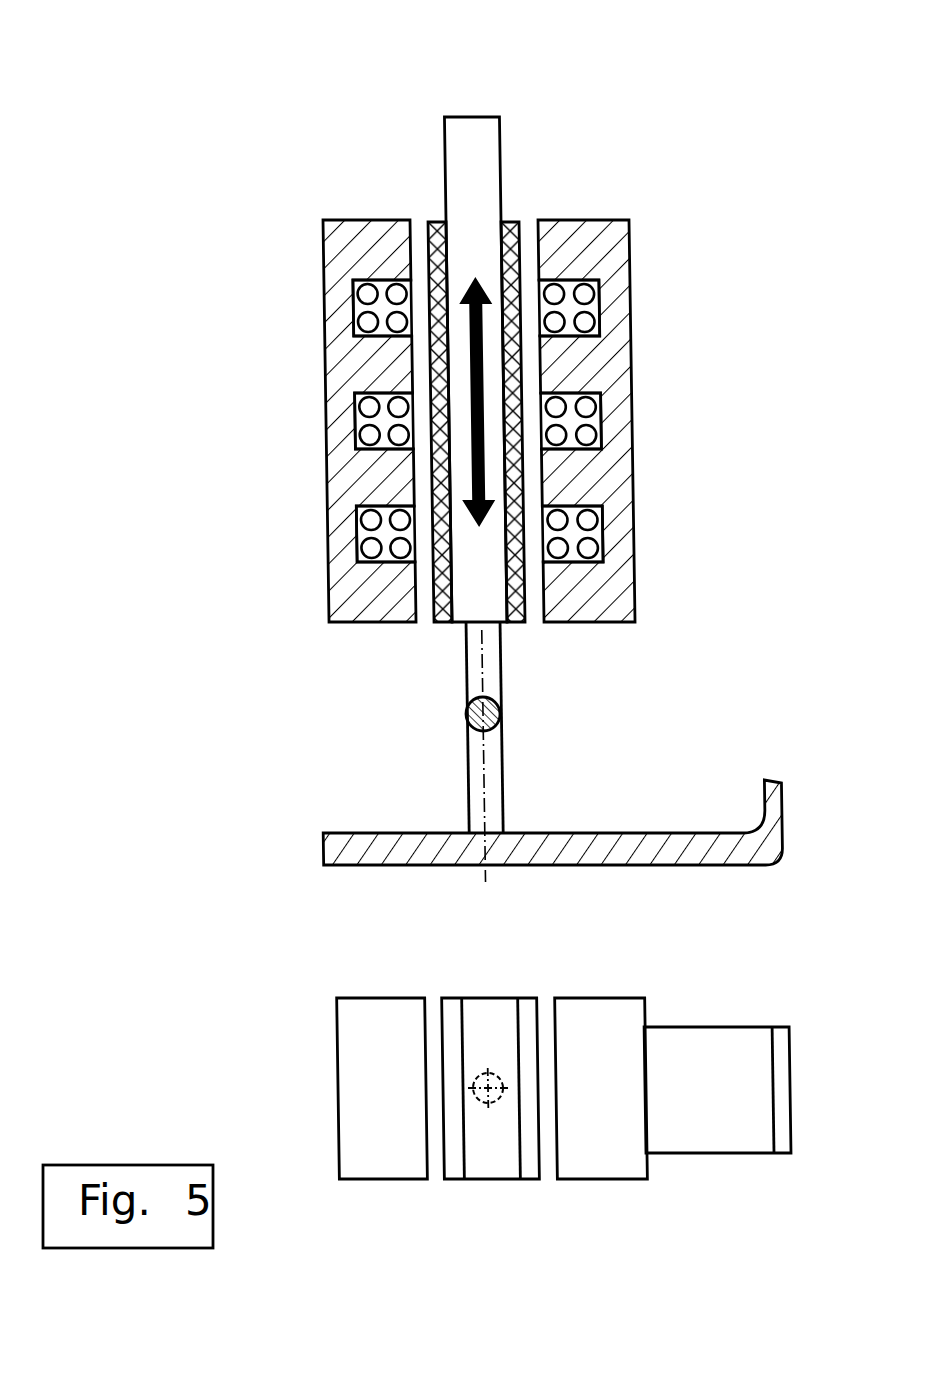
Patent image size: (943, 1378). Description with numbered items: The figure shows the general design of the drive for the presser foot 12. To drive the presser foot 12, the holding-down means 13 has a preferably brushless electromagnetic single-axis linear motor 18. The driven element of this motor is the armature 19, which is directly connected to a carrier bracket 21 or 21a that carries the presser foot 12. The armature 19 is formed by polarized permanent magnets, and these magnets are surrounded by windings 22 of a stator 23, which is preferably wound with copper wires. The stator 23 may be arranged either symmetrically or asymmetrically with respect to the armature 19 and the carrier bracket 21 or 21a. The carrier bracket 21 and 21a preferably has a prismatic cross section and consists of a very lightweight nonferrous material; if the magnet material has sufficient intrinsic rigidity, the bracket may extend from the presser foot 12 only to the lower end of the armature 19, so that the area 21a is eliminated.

The presser foot 12 is at (382, 850).
The holding-down means 13 is at (758, 172).
The single-axis linear motor 18 is at (545, 152).
The armature 19 is at (515, 224).
The carrier bracket 21 is at (485, 772).
The carrier bracket area 21a is at (463, 187).
The windings 22 is at (598, 292).
The stator 23 is at (592, 470).